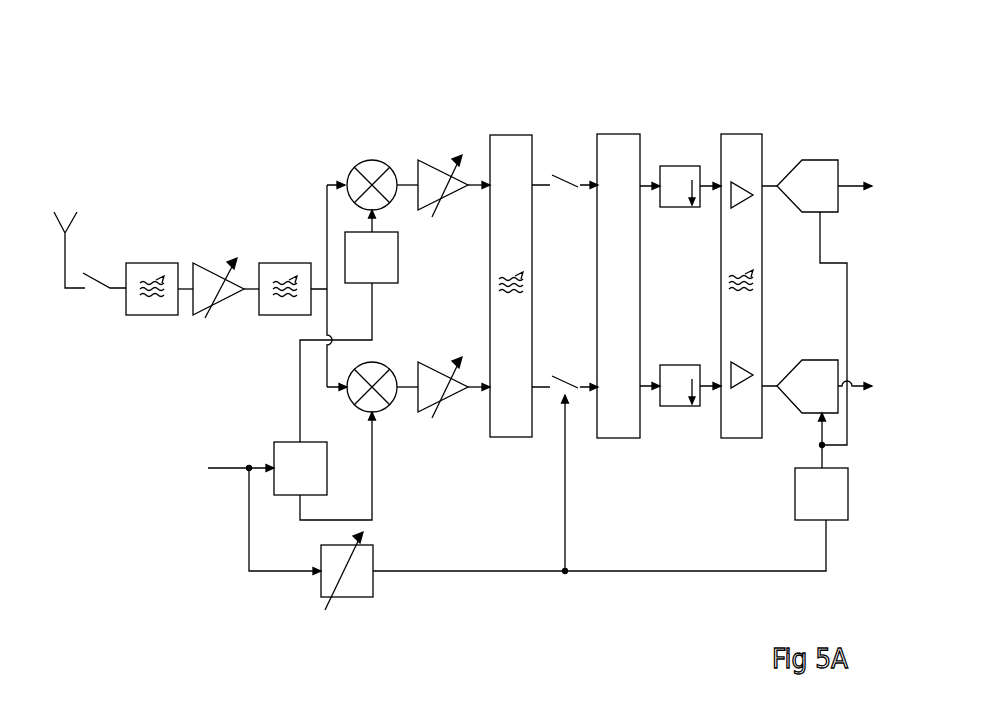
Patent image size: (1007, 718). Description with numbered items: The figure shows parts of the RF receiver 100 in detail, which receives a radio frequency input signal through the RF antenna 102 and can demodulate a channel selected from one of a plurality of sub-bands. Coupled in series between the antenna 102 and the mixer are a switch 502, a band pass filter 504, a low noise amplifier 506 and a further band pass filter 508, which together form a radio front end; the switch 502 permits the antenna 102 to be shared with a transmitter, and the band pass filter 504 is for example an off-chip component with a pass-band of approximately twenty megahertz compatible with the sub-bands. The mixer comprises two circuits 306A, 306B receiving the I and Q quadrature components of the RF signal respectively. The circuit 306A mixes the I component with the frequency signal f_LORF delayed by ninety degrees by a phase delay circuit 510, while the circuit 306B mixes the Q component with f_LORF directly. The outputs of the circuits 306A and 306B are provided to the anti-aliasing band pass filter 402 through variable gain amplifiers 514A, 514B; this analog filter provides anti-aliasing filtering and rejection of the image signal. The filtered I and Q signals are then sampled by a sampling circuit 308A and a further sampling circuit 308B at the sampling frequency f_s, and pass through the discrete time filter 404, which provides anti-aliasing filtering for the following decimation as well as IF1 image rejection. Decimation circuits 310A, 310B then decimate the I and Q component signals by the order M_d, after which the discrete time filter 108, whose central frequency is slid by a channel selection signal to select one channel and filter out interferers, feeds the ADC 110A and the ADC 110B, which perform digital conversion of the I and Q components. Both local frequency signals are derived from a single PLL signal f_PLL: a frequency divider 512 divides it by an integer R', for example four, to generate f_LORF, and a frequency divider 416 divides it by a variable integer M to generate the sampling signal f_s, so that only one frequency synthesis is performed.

The RF receiver 100 is at (744, 60).
The RF antenna 102 is at (80, 223).
The switch 502 is at (95, 295).
The band pass filter 504 is at (148, 270).
The low noise amplifier 506 is at (232, 305).
The further band pass filter 508 is at (290, 265).
The mixer circuit 306A is at (372, 165).
The mixer circuit 306B is at (372, 367).
The phase delay circuit 510 is at (395, 272).
The variable gain amplifier 514A is at (462, 190).
The variable gain amplifier 514B is at (455, 392).
The anti-aliasing filter 402 is at (510, 140).
The sampling circuit 308A is at (560, 188).
The further sampling circuit 308B is at (570, 375).
The discrete time filter 404 is at (615, 142).
The decimation circuit 310A is at (680, 168).
The decimation circuit 310B is at (680, 368).
The discrete time filter 108 is at (735, 142).
The ADC 110A is at (818, 168).
The ADC 110B is at (818, 368).
The frequency divider 512 is at (282, 452).
The frequency divider 416 is at (365, 558).